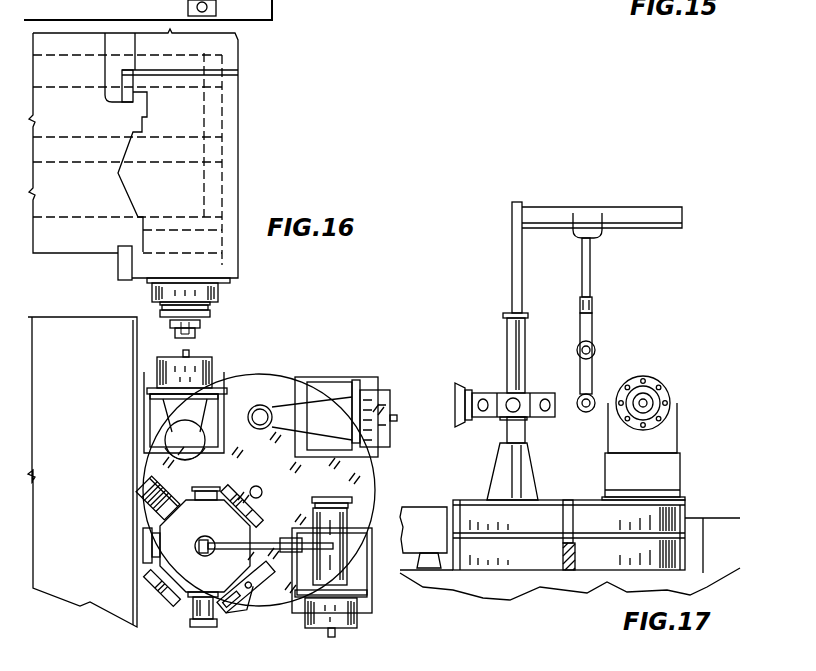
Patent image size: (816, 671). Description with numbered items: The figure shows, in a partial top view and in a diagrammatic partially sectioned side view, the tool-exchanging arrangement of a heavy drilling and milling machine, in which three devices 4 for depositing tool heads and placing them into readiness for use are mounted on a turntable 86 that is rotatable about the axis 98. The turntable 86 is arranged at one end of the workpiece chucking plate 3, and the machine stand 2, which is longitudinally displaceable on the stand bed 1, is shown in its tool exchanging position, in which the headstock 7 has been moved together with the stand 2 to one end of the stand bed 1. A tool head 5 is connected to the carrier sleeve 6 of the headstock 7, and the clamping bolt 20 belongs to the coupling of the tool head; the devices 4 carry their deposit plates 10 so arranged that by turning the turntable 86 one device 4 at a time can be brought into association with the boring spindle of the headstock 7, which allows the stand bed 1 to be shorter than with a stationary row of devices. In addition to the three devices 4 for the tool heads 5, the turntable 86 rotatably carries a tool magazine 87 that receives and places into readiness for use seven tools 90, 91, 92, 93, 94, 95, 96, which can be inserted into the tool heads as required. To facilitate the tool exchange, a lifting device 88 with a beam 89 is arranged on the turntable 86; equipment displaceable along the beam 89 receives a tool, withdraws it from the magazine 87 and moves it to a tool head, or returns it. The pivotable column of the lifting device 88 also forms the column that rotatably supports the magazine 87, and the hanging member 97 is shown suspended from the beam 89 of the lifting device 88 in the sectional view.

In FIG. 16, the stand bed 1 is at (93, 48).
In FIG. 16, the stand 2 is at (86, 206).
In FIG. 17, the workpiece chucking plate 3 is at (432, 512).
In FIG. 16, the device for placing tool heads into readiness for use and depositing tool heads 4 is at (218, 432).
In FIG. 17, the device for placing tool heads into readiness for use and depositing tool heads 4 is at (695, 474).
In FIG. 16, the tool head 5 is at (213, 364).
In FIG. 17, the tool head 5 is at (671, 365).
In FIG. 16, the carrier sleeve 6 is at (220, 292).
In FIG. 16, the headstock 7 is at (238, 122).
In FIG. 16, the deposit plate 10 is at (150, 392).
In FIG. 17, the deposit plate 10 is at (670, 420).
In FIG. 16, the clamping bolt 20 is at (190, 355).
In FIG. 16, the turntable 86 is at (360, 487).
In FIG. 17, the turntable 86 is at (503, 558).
In FIG. 16, the tool magazine 87 is at (206, 574).
In FIG. 17, the tool magazine 87 is at (500, 398).
In FIG. 16, the lifting device 88 is at (205, 546).
In FIG. 17, the lifting device 88 is at (513, 348).
In FIG. 16, the beam 89 is at (218, 537).
In FIG. 17, the beam 89 is at (631, 216).
In FIG. 16, the tool 90 is at (252, 602).
In FIG. 16, the tool 91 is at (195, 612).
In FIG. 16, the tool 92 is at (150, 582).
In FIG. 16, the tool 93 is at (143, 545).
In FIG. 17, the tool 93 is at (455, 407).
In FIG. 16, the tool 94 is at (143, 497).
In FIG. 16, the tool 95 is at (208, 490).
In FIG. 16, the tool 96 is at (262, 513).
In FIG. 17, the hanging rod 97 is at (593, 327).
In FIG. 16, the axis 98 is at (259, 486).
In FIG. 17, the axis 98 is at (568, 500).